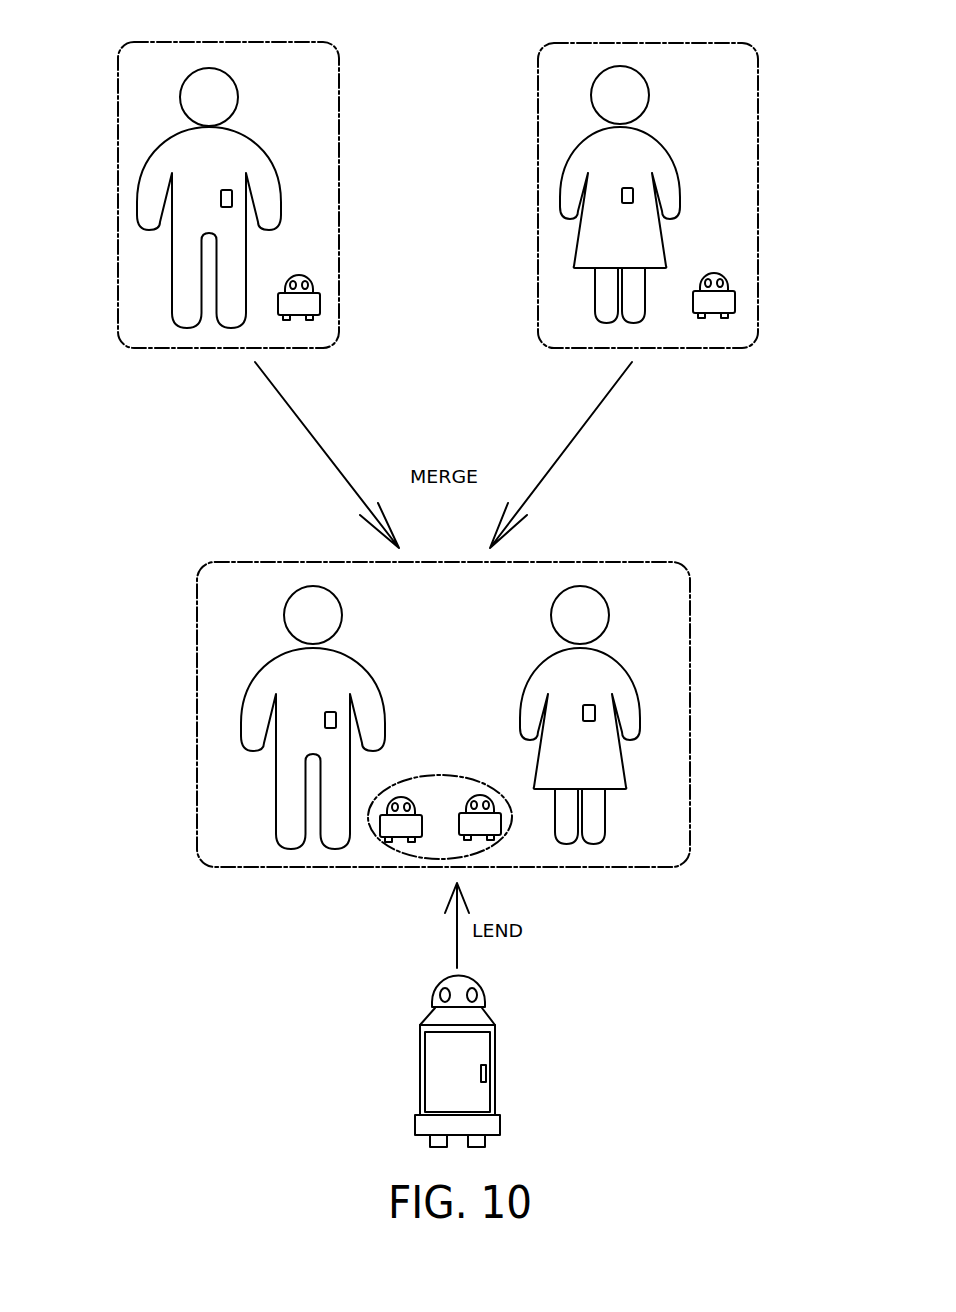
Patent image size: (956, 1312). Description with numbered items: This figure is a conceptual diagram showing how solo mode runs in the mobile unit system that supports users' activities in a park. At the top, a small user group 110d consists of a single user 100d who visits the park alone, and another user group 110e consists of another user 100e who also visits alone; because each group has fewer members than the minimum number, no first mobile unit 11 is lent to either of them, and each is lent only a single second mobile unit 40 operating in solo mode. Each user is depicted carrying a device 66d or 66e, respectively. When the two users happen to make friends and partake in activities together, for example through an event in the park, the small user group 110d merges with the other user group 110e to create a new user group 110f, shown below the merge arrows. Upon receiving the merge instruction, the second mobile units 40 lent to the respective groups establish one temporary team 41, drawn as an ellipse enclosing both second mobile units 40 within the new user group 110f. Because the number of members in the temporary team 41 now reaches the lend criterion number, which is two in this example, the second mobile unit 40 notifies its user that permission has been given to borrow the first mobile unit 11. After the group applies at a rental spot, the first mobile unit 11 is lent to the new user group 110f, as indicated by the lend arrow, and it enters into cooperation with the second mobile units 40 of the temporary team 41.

The small user group 110d is at (150, 42).
The another user group 110e is at (722, 43).
The new user group 110f is at (650, 562).
The user 100d is at (238, 91).
The another user 100e is at (649, 92).
The user terminal 66d is at (226, 190).
The user terminal 66e is at (627, 188).
The second mobile unit 40 is at (320, 304).
The temporary team 41 is at (436, 776).
The first mobile unit 11 is at (495, 1068).